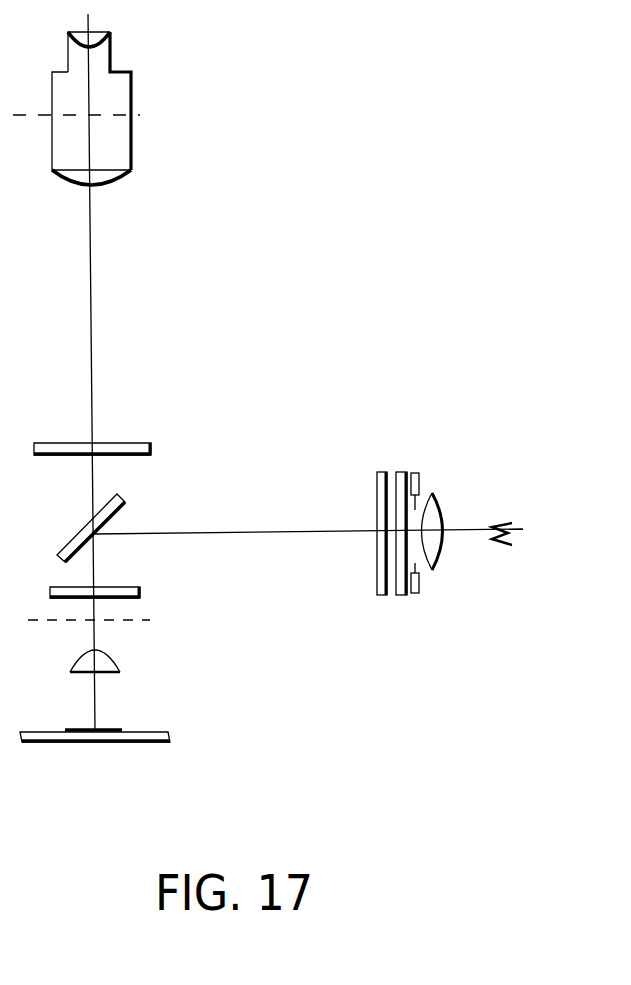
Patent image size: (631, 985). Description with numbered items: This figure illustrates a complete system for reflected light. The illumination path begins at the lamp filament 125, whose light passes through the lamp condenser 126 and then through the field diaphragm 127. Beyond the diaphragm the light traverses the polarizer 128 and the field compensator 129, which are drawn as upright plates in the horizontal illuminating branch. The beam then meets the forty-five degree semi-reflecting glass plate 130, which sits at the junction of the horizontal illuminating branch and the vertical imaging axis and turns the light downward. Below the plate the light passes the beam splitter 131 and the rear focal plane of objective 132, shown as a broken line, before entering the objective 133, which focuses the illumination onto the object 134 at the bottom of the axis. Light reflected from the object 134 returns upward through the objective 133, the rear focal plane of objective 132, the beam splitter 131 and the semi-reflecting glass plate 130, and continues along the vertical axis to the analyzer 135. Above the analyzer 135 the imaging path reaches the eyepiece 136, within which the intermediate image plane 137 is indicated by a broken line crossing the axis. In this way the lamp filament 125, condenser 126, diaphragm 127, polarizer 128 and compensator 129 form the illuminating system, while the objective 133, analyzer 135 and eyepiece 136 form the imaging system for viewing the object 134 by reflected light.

The lamp filament 125 is at (493, 548).
The lamp condenser 126 is at (440, 508).
The field diaphragm 127 is at (415, 597).
The polarizer 128 is at (398, 472).
The field compensator 129 is at (377, 582).
The 45° semi-reflecting glass plate 130 is at (118, 510).
The beam splitter 131 is at (120, 595).
The rear focal plane of objective 132 is at (115, 622).
The objective 133 is at (120, 669).
The object 134 is at (112, 728).
The analyzer 135 is at (120, 451).
The eyepiece 136 is at (131, 155).
The intermediate image plane 137 is at (160, 115).